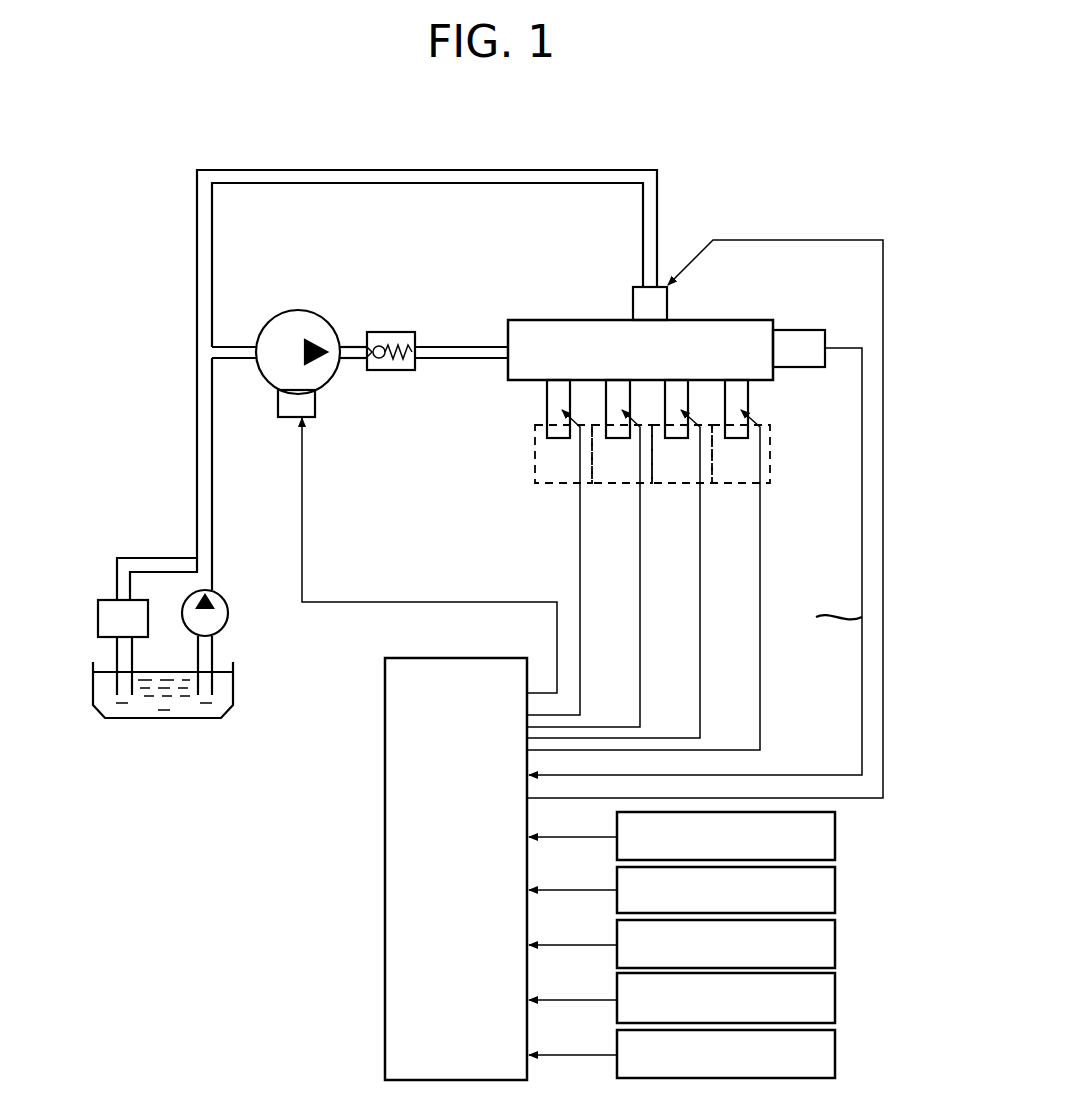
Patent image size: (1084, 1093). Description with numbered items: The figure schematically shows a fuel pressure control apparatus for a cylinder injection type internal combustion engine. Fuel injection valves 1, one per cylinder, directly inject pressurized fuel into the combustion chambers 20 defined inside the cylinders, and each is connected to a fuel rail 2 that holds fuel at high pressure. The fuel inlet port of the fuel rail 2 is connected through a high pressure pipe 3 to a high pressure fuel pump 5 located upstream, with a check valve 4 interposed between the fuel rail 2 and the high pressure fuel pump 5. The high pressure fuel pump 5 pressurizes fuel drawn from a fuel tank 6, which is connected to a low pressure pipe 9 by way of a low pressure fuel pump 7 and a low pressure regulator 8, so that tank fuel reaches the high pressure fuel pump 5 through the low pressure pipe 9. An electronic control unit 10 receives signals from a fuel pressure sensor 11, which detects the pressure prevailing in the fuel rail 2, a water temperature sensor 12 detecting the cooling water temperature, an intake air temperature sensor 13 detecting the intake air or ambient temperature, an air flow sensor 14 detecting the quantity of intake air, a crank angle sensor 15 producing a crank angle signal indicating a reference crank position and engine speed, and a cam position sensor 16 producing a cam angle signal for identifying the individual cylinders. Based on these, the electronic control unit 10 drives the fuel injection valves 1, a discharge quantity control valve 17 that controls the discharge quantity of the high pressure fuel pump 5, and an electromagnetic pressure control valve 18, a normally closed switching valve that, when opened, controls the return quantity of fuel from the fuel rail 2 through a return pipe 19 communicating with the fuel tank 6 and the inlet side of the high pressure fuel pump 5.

The fuel injection valve 1 is at (749, 393).
The fuel rail 2 is at (550, 317).
The high pressure pipe 3 is at (460, 343).
The check valve 4 is at (392, 332).
The high pressure fuel pump 5 is at (298, 310).
The fuel tank 6 is at (233, 685).
The low pressure fuel pump 7 is at (228, 610).
The low pressure regulator 8 is at (106, 600).
The low pressure pipe 9 is at (197, 455).
The electronic control unit 10 is at (385, 767).
The fuel pressure sensor 11 is at (797, 328).
The water temperature sensor 12 is at (835, 833).
The intake air temperature sensor 13 is at (835, 888).
The air flow sensor 14 is at (835, 943).
The crank angle sensor 15 is at (835, 997).
The cam position sensor 16 is at (835, 1053).
The discharge quantity control valve 17 is at (315, 400).
The electromagnetic pressure control valve 18 is at (632, 303).
The return pipe 19 is at (435, 170).
The combustion chamber 20 is at (773, 460).